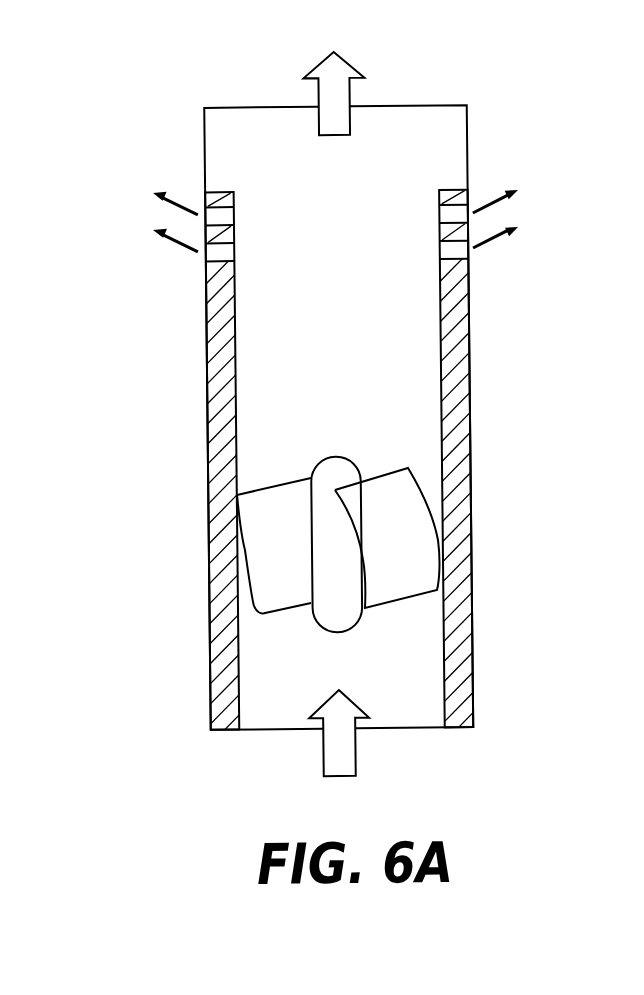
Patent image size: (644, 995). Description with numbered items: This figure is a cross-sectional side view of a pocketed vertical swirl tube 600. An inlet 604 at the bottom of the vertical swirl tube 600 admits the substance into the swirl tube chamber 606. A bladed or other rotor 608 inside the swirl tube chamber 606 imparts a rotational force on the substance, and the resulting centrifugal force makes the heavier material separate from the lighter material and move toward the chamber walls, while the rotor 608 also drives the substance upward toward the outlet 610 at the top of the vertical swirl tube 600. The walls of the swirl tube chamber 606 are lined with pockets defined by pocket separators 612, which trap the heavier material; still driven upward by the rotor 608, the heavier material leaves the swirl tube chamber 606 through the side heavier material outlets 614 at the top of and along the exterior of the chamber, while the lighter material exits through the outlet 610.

The pocketed vertical swirl tube 600 is at (116, 309).
The inlet 604 is at (282, 730).
The swirl tube chamber 606 is at (415, 406).
The rotor 608 is at (404, 558).
The outlet 610 is at (265, 107).
The pocket separators 612 is at (458, 343).
The side heavier material outlets 614 is at (227, 251).